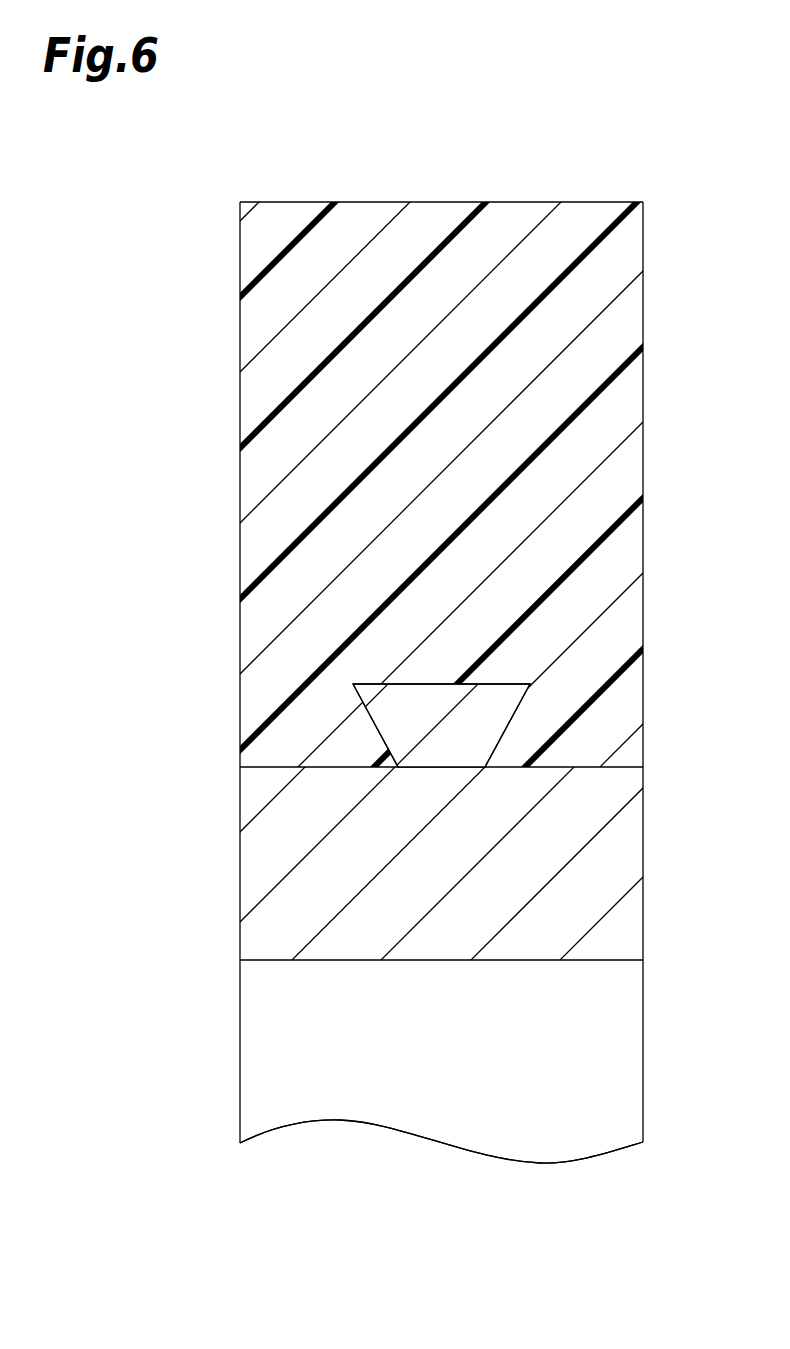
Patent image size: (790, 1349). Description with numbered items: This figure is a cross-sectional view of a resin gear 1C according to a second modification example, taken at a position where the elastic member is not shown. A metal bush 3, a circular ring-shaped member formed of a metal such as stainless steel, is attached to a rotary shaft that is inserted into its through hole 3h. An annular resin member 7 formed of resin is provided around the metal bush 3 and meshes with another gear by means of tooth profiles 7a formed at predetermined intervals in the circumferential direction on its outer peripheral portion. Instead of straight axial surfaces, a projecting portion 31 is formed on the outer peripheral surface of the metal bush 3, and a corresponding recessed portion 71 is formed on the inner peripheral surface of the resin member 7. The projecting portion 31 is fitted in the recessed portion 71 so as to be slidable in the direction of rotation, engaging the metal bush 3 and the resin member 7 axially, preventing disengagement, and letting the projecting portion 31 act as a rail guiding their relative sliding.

The resin gear 1C is at (155, 230).
The resin member 7 is at (627, 388).
The tooth profile 7a is at (618, 202).
The recessed portion 71 is at (490, 685).
The metal bush 3 is at (628, 851).
The projecting portion 31 is at (403, 725).
The through hole 3h is at (572, 1072).